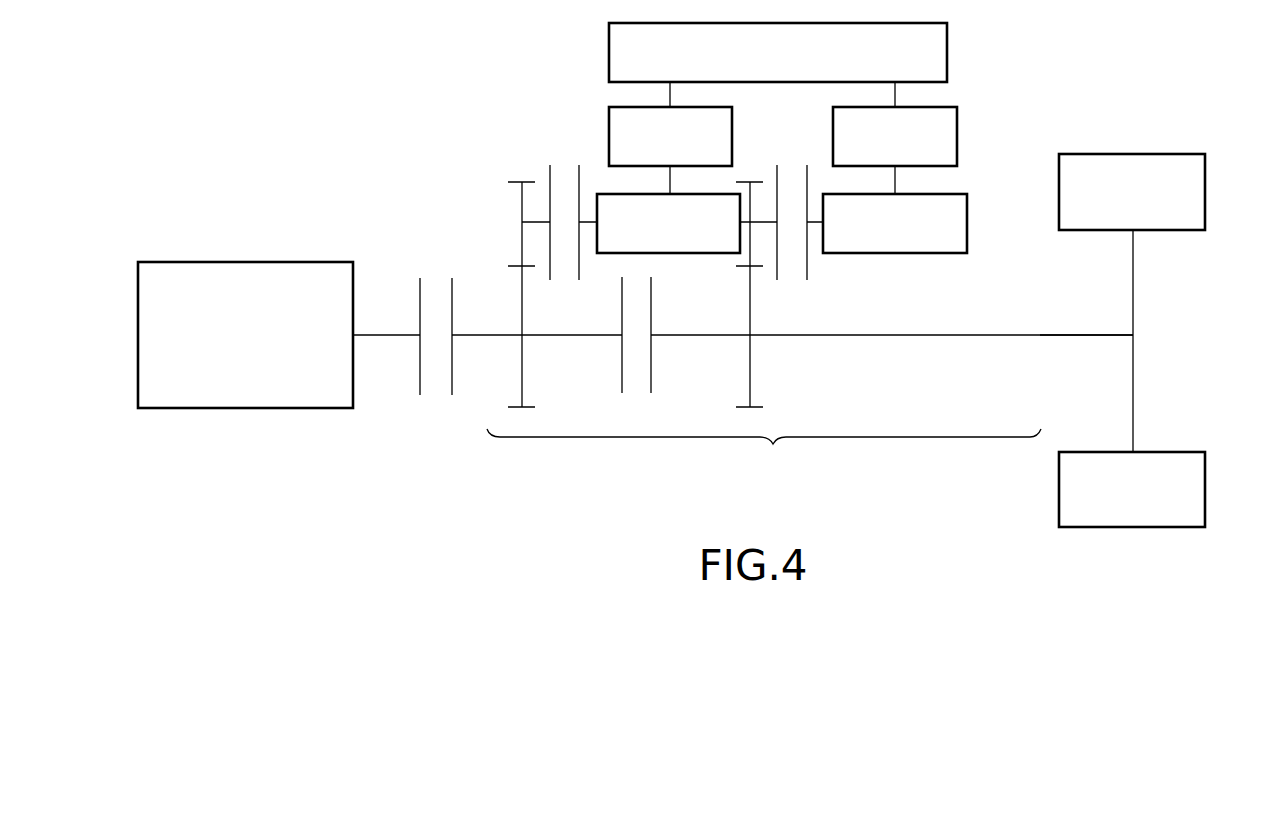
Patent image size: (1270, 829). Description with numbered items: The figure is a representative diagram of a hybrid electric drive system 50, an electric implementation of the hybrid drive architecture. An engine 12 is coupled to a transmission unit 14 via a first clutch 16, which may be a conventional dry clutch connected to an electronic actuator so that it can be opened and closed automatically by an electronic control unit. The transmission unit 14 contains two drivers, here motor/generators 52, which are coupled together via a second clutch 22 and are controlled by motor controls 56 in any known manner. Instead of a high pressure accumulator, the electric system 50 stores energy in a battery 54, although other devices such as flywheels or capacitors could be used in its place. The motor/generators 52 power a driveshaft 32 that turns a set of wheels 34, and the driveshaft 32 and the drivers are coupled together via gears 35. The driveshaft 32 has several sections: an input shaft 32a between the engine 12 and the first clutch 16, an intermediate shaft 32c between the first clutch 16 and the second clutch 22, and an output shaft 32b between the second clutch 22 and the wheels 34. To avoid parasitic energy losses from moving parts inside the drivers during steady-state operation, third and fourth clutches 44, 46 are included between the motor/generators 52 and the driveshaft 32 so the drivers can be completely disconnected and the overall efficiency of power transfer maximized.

The engine 12 is at (256, 408).
The transmission unit 14 is at (771, 445).
The first clutch 16 is at (438, 280).
The second clutch 22 is at (636, 393).
The driveshaft 32 is at (1015, 338).
The input shaft 32a is at (388, 336).
The output shaft 32b is at (1067, 336).
The intermediate shaft 32c is at (492, 335).
The wheels 34 is at (1205, 176).
The gears 35 is at (522, 360).
The third clutch 44 is at (560, 280).
The fourth clutch 46 is at (790, 280).
The hybrid electric drive system 50 is at (1116, 97).
The motor/generator 52 is at (691, 253).
The battery 54 is at (947, 50).
The motor control 56 is at (609, 117).